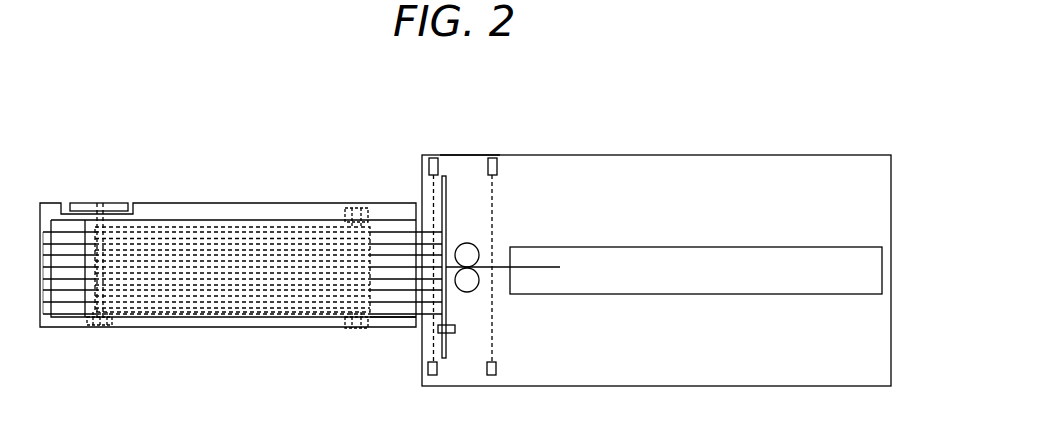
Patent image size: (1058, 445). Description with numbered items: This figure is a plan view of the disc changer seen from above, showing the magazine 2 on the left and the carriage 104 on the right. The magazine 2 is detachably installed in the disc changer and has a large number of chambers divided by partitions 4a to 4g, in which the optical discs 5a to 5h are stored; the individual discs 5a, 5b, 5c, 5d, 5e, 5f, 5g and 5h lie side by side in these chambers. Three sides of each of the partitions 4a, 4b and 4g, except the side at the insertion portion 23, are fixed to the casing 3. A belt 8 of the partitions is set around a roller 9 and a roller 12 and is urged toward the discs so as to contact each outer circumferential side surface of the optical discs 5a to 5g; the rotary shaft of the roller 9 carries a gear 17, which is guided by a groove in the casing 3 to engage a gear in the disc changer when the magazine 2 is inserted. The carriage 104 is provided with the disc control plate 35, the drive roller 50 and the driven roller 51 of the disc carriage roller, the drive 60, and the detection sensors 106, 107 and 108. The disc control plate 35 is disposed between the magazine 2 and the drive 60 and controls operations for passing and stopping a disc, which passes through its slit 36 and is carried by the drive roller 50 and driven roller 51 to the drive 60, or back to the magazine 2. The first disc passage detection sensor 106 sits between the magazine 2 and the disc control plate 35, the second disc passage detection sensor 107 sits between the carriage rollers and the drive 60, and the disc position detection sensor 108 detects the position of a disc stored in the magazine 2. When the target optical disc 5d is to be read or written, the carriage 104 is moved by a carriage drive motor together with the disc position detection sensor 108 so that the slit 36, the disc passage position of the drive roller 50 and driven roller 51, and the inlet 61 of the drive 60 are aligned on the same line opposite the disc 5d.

The magazine 2 is at (291, 201).
The casing 3 is at (228, 207).
The partition 4a is at (58, 228).
The partition 4b is at (100, 300).
The partition 4g is at (146, 310).
The optical disc 5a is at (190, 232).
The optical disc 5b is at (228, 244).
The optical disc 5c is at (260, 255).
The optical disc 5d is at (540, 267).
The optical disc 5e is at (300, 279).
The optical disc 5f is at (328, 290).
The optical disc 5g is at (357, 302).
The optical disc 5h is at (390, 314).
The belt 8 is at (78, 274).
The roller 9 is at (92, 223).
The roller 12 is at (356, 207).
The gear 17 is at (110, 209).
The insertion portion 23 is at (413, 332).
The disc control plate 35 is at (463, 155).
The slit 36 is at (438, 228).
The drive roller 50 is at (467, 243).
The driven roller 51 is at (470, 292).
The drive 60 is at (700, 247).
The inlet 61 is at (500, 272).
The carriage 104 is at (682, 155).
The disc passage 1 detection sensor 106 is at (433, 157).
The disc passage 2 detection sensor 107 is at (492, 157).
The disc position detection sensor 108 is at (455, 334).